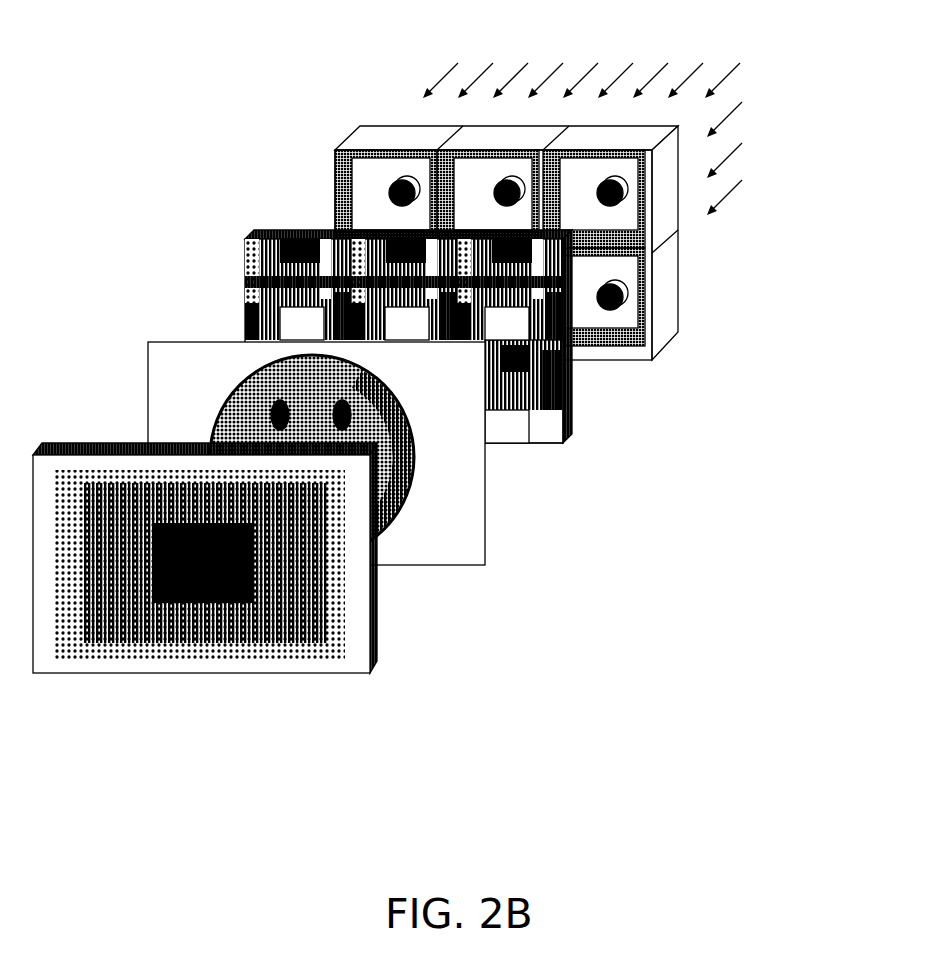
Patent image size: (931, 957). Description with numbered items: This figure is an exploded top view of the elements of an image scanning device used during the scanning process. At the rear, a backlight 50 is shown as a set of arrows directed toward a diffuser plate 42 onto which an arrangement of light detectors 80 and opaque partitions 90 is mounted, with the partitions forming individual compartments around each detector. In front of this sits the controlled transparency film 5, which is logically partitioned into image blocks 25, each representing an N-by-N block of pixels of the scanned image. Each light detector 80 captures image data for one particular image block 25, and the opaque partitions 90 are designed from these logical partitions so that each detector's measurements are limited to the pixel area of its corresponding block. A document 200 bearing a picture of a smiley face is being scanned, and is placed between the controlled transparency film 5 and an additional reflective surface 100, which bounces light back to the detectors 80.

The backlight 50 is at (615, 120).
The opaque partitions 90 is at (481, 247).
The diffuser plate 42 is at (370, 208).
The light detectors 80 is at (617, 198).
The controlled transparency film 5 is at (448, 374).
The image blocks 25 is at (404, 375).
The document 200 is at (433, 530).
The reflective surface 100 is at (327, 643).